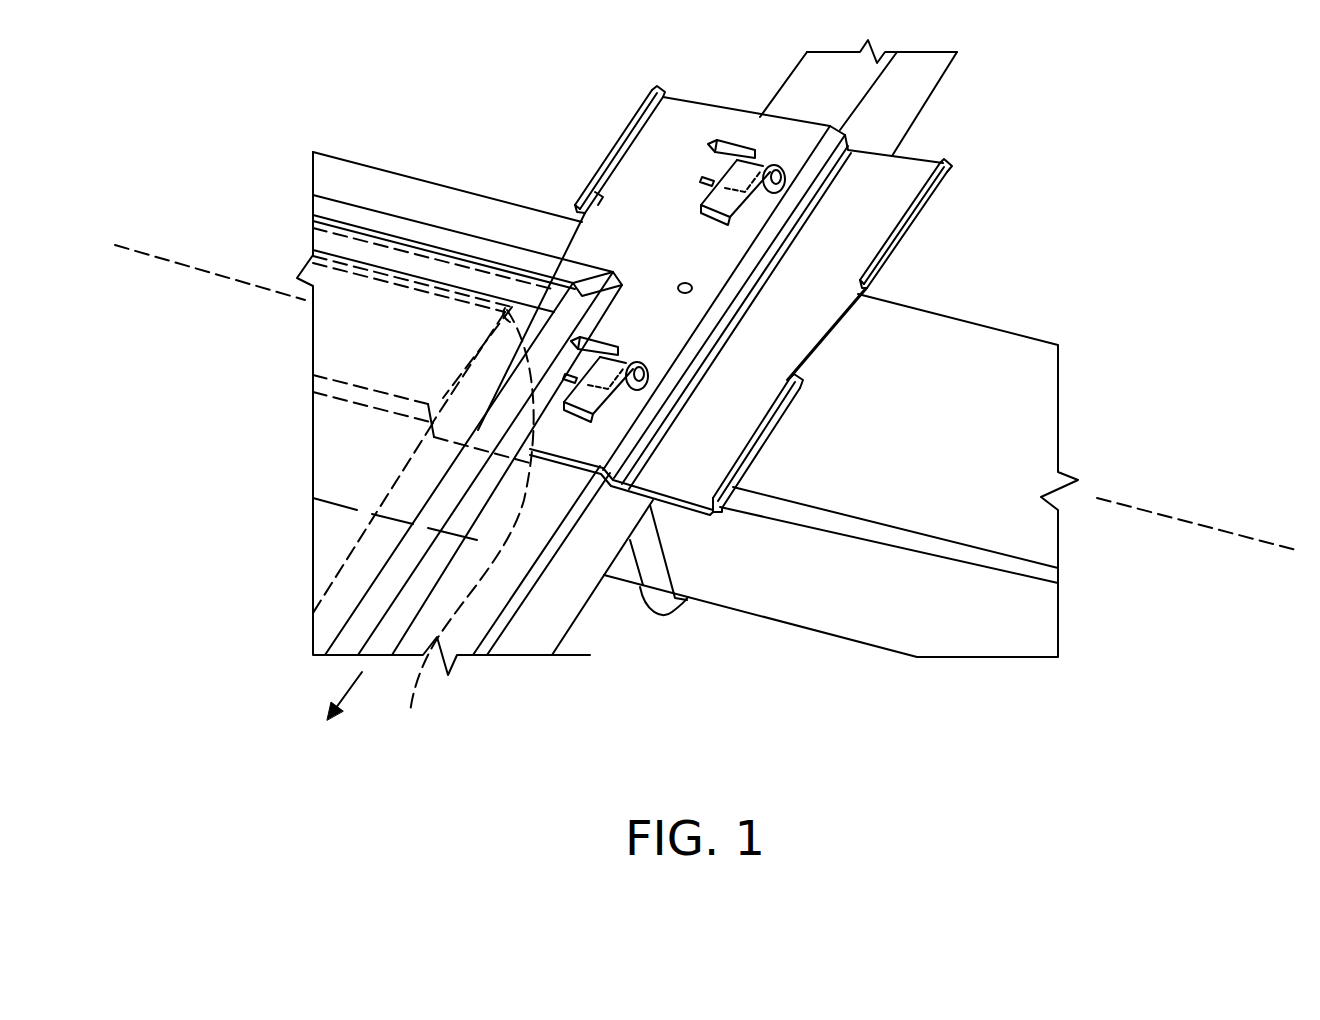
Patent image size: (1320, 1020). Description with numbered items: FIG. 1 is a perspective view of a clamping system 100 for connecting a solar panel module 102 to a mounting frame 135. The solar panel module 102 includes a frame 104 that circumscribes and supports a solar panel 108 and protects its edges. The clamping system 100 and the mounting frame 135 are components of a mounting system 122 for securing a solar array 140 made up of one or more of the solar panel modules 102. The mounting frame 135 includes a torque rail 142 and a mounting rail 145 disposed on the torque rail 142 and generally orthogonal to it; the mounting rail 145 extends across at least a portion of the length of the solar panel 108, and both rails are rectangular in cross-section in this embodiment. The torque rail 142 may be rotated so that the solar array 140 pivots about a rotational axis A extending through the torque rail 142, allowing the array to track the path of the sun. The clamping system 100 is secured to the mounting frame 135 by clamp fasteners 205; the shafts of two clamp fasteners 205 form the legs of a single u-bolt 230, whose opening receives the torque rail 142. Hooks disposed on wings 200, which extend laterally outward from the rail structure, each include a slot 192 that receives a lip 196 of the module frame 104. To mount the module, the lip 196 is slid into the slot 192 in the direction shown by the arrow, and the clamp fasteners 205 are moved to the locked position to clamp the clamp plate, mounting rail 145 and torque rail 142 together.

The clamping system 100 is at (953, 152).
The solar panel module 102 is at (477, 218).
The frame 104 is at (330, 205).
The solar panel 108 is at (343, 283).
The mounting system 122 is at (270, 443).
The mounting frame 135 is at (600, 683).
The solar array 140 is at (296, 647).
The torque rail 142 is at (973, 338).
The mounting rail 145 is at (512, 637).
The slot 192 is at (461, 530).
The lip 196 is at (387, 262).
The wing 200 is at (663, 165).
The clamp fastener 205 is at (767, 157).
The u-bolt 230 is at (647, 570).
The rotational axis A is at (175, 262).